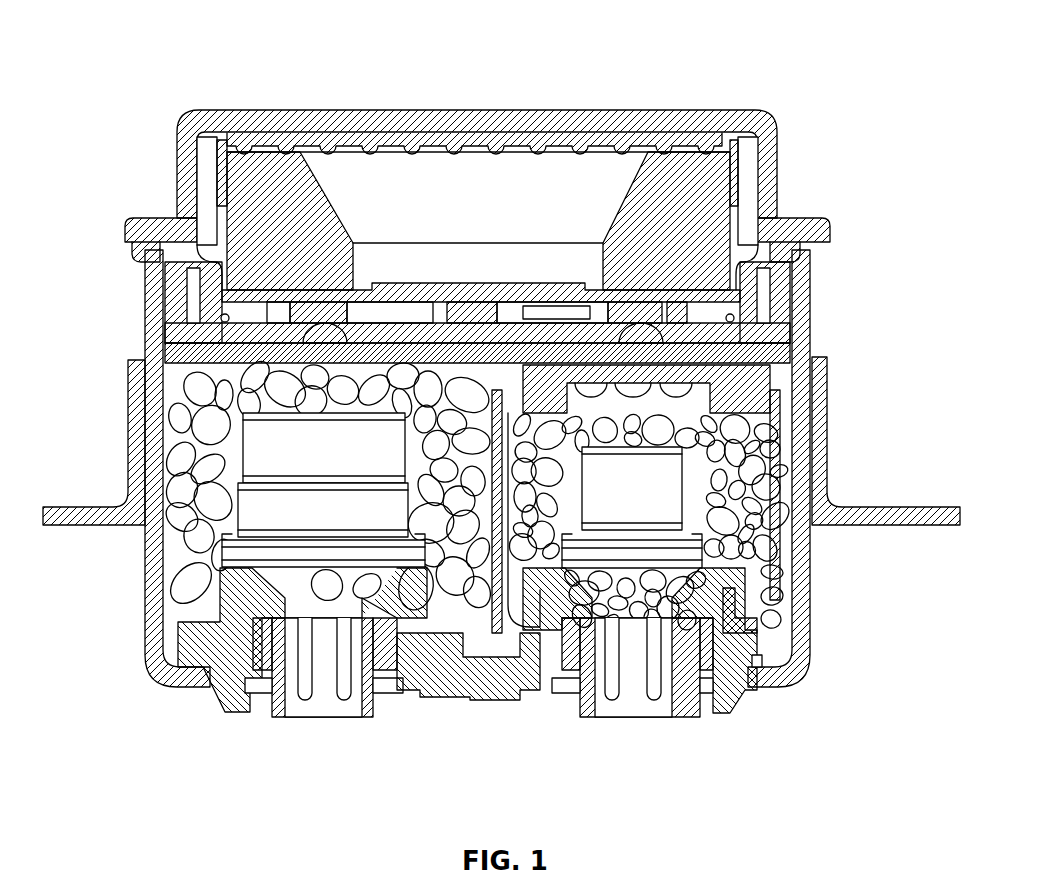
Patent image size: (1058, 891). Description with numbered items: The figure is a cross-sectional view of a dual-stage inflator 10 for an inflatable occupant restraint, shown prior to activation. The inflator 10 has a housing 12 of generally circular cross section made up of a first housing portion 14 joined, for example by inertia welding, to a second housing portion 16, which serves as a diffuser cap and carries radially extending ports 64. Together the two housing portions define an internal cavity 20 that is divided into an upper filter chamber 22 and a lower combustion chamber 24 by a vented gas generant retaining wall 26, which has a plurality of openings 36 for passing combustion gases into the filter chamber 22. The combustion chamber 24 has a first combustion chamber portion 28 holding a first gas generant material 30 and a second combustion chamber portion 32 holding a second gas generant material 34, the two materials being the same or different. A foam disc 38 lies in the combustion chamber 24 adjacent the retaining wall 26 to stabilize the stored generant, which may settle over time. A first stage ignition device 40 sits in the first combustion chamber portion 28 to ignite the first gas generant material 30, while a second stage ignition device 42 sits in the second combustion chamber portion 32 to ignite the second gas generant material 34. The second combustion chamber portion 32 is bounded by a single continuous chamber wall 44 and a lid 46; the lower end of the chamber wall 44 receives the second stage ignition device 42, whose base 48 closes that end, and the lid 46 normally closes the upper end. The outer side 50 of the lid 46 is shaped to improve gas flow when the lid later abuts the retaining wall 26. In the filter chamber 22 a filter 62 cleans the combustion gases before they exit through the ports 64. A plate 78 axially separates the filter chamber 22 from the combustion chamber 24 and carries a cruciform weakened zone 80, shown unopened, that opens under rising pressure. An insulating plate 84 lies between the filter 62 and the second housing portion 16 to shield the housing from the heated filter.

The inflator 10 is at (812, 72).
The housing 12 is at (140, 576).
The first housing portion 14 is at (150, 535).
The second housing portion 16 is at (178, 172).
The internal cavity 20 is at (232, 437).
The filter chamber 22 is at (210, 158).
The combustion chamber 24 is at (190, 680).
The gas generant retaining wall 26 is at (203, 335).
The first combustion chamber portion 28 is at (458, 700).
The first gas generant material 30 is at (178, 605).
The second combustion chamber portion 32 is at (760, 612).
The second gas generant material 34 is at (740, 540).
The openings 36 is at (407, 323).
The foam disc 38 is at (780, 335).
The first stage ignition device 40 is at (222, 442).
The second stage ignition device 42 is at (695, 477).
The chamber wall 44 is at (772, 457).
The lid 46 is at (747, 408).
The base 48 is at (545, 700).
The outer side 50 is at (793, 365).
The filter 62 is at (214, 223).
The radially extending ports 64 is at (190, 185).
The plate 78 is at (572, 270).
The weakened zone 80 is at (480, 240).
The insulating plate 84 is at (300, 148).